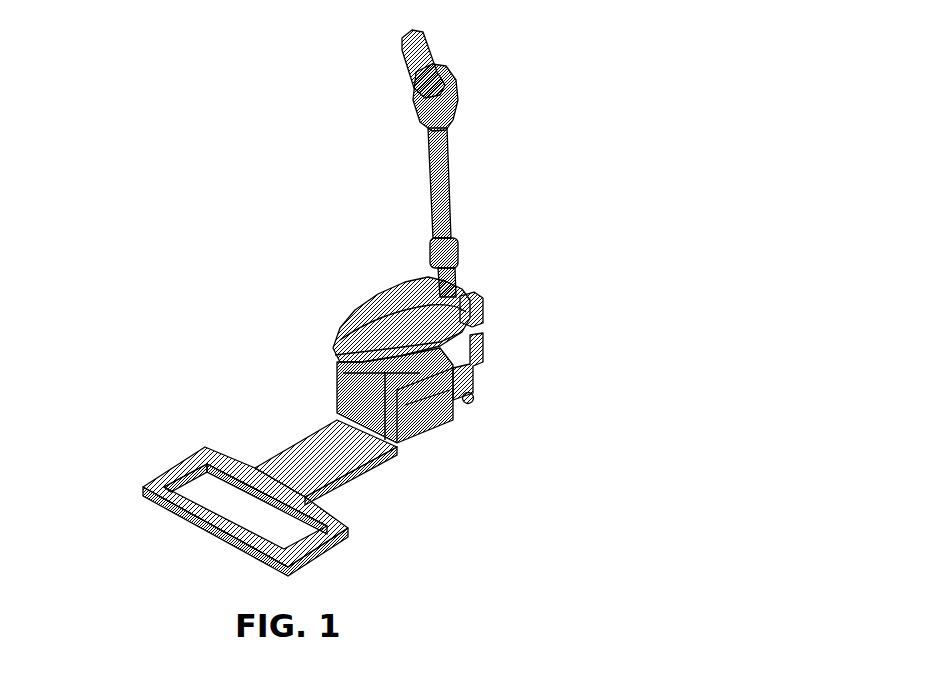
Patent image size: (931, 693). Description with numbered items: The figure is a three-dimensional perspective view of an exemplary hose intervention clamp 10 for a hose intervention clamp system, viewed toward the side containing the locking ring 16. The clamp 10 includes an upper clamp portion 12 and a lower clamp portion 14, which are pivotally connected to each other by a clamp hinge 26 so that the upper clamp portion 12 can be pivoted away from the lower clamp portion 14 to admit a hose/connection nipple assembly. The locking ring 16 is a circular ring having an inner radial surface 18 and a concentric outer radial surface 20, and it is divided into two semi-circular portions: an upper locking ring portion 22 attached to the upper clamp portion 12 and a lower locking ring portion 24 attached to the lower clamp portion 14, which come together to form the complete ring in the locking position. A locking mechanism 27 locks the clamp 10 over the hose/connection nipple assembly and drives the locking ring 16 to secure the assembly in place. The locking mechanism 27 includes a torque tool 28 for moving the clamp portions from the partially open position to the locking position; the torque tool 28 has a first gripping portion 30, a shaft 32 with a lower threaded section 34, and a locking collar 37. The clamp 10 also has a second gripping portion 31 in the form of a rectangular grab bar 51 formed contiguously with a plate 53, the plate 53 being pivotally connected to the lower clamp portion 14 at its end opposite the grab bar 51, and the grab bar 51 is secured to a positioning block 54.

The hose intervention clamp 10 is at (256, 147).
The upper clamp portion 12 is at (387, 308).
The lower clamp portion 14 is at (470, 378).
The locking ring 16 is at (418, 420).
The inner radial surface 18 is at (331, 369).
The outer radial surface 20 is at (417, 348).
The upper locking ring portion 22 is at (427, 358).
The lower locking ring portion 24 is at (426, 416).
The clamp hinge 26 is at (385, 440).
The locking mechanism 27 is at (508, 163).
The torque tool 28 is at (445, 129).
The first gripping portion 30 is at (437, 65).
The second gripping portion 31 is at (173, 513).
The shaft 32 is at (443, 217).
The lower threaded section 34 is at (457, 295).
The locking collar 37 is at (455, 257).
The grab bar 51 is at (170, 470).
The plate 53 is at (317, 444).
The positioning block 54 is at (462, 404).